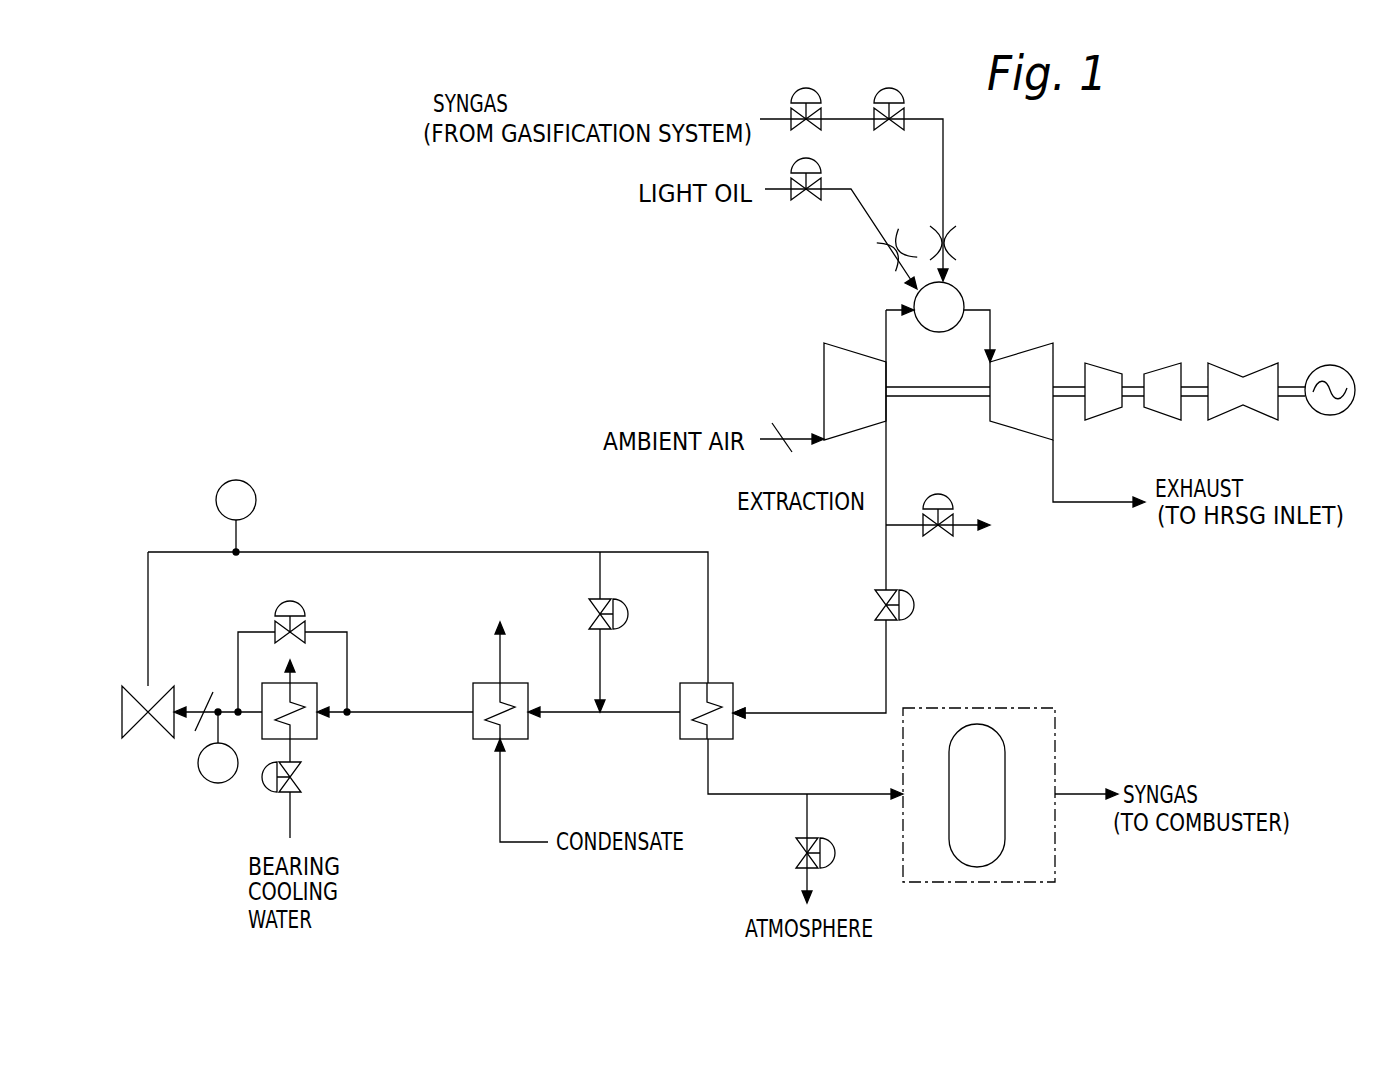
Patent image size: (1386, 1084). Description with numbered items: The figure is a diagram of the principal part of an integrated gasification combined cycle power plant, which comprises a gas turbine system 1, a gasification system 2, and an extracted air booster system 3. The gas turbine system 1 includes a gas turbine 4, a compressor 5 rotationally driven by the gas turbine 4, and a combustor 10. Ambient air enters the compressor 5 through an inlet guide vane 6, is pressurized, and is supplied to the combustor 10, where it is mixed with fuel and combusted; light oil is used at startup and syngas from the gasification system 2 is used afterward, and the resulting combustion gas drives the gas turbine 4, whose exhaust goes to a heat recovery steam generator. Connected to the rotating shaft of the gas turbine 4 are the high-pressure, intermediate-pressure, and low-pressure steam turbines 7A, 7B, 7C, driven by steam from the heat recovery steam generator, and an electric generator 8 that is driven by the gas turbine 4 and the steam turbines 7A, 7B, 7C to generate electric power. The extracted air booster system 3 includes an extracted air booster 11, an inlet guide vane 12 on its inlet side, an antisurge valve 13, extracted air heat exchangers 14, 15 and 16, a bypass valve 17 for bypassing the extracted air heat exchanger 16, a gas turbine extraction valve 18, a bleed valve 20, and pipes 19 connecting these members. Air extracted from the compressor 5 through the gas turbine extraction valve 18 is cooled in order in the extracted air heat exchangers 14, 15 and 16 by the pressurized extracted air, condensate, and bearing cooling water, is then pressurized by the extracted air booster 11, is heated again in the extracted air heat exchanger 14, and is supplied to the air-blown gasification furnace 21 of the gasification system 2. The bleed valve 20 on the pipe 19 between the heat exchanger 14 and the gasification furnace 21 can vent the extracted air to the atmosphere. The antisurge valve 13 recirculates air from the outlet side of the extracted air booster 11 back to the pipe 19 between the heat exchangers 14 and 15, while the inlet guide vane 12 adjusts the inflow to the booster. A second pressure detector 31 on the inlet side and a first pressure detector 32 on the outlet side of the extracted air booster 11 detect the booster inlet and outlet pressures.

The gas turbine system 1 is at (1081, 246).
The gasification system 2 is at (1015, 707).
The extracted air booster system 3 is at (196, 520).
The gas turbine 4 is at (1038, 342).
The compressor 5 is at (852, 342).
The inlet guide vane 6 is at (781, 434).
The high-pressure steam turbine 7A is at (1108, 362).
The intermediate-pressure steam turbine 7B is at (1162, 374).
The low-pressure steam turbine 7C is at (1262, 365).
The electric generator 8 is at (1330, 365).
The combustor 10 is at (958, 290).
The extracted air booster 11 is at (134, 685).
The inlet guide vane 12 is at (205, 690).
The antisurge valve 13 is at (633, 618).
The extracted air heat exchanger 14 is at (720, 683).
The extracted air heat exchanger 15 is at (483, 683).
The extracted air heat exchanger 16 is at (317, 693).
The bypass valve 17 is at (305, 612).
The gas turbine extraction valve 18 is at (917, 600).
The pipes 19 is at (450, 548).
The bleed valve 20 is at (838, 858).
The air-blown gasification furnace 21 is at (1005, 776).
The second pressure detector 31 is at (218, 783).
The first pressure detector 32 is at (257, 497).